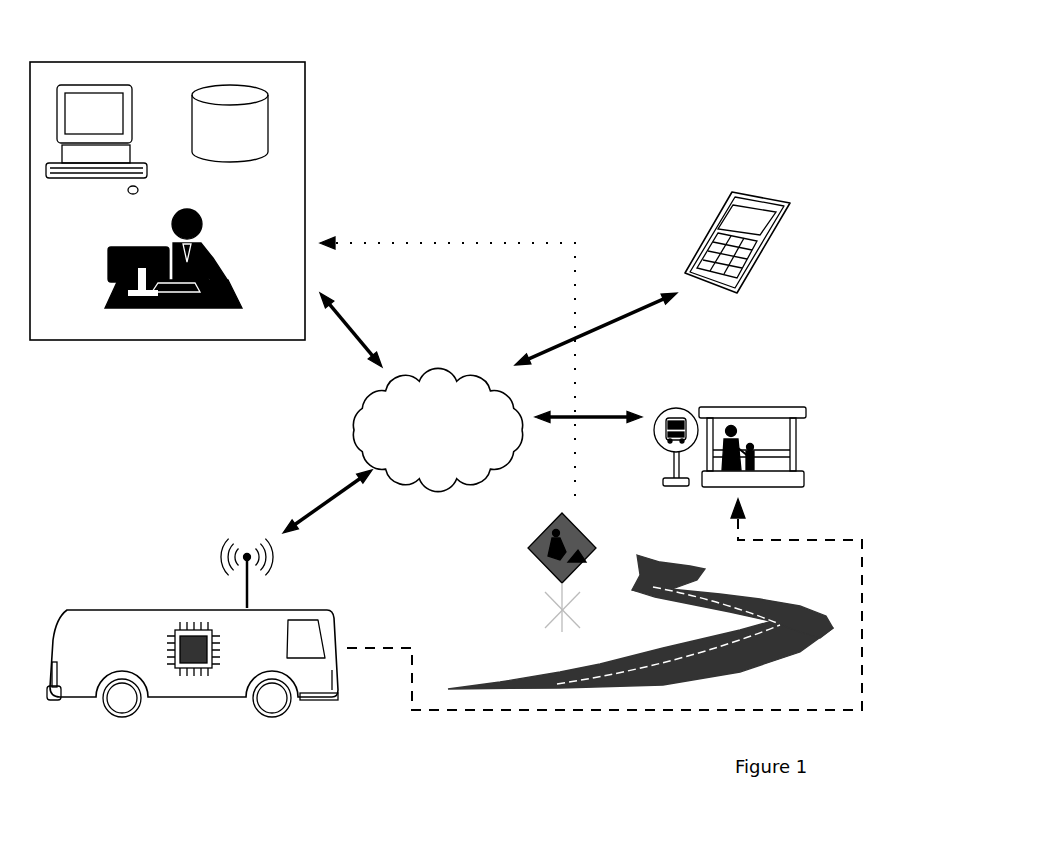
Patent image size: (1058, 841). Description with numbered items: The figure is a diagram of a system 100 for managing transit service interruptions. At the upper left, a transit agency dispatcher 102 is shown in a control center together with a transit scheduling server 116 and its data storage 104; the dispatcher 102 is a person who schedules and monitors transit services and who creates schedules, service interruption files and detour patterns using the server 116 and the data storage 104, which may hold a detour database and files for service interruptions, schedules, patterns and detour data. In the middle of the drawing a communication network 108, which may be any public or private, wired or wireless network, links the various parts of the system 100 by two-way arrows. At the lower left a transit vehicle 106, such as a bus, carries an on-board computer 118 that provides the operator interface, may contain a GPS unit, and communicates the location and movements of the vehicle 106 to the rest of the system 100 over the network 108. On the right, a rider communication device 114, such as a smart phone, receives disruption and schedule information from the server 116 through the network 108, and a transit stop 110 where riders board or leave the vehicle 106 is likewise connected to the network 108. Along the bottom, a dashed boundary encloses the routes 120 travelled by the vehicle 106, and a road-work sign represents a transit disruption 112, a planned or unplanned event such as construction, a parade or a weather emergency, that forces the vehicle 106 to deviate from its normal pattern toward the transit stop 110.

The system 100 is at (670, 80).
The transit agency dispatcher 102 is at (138, 316).
The data storage 104 is at (275, 135).
The transit vehicle 106 is at (57, 613).
The communication network 108 is at (337, 428).
The transit stop 110 is at (810, 423).
The transit disruption 112 is at (520, 568).
The rider communication device 114 is at (782, 193).
The transit scheduling server 116 is at (108, 84).
The on-board computer 118 is at (172, 624).
The routes 120 is at (557, 717).